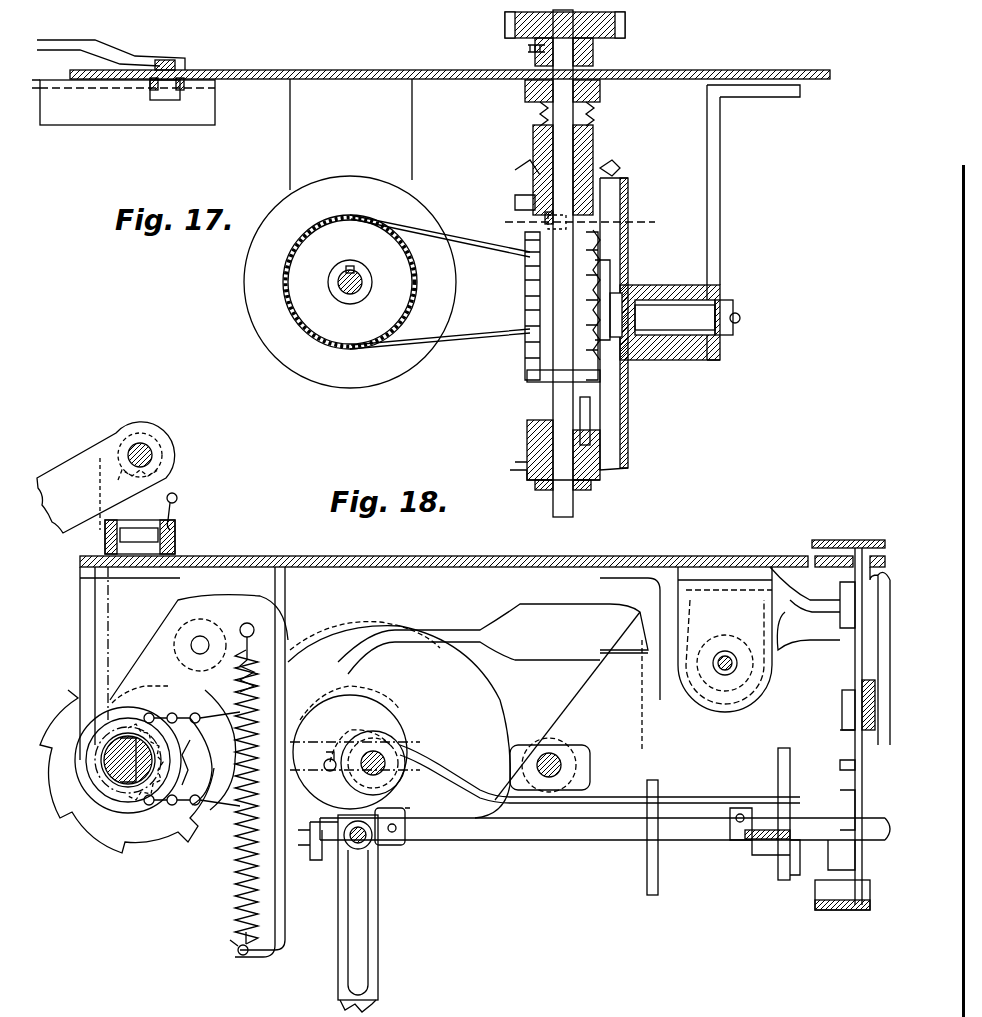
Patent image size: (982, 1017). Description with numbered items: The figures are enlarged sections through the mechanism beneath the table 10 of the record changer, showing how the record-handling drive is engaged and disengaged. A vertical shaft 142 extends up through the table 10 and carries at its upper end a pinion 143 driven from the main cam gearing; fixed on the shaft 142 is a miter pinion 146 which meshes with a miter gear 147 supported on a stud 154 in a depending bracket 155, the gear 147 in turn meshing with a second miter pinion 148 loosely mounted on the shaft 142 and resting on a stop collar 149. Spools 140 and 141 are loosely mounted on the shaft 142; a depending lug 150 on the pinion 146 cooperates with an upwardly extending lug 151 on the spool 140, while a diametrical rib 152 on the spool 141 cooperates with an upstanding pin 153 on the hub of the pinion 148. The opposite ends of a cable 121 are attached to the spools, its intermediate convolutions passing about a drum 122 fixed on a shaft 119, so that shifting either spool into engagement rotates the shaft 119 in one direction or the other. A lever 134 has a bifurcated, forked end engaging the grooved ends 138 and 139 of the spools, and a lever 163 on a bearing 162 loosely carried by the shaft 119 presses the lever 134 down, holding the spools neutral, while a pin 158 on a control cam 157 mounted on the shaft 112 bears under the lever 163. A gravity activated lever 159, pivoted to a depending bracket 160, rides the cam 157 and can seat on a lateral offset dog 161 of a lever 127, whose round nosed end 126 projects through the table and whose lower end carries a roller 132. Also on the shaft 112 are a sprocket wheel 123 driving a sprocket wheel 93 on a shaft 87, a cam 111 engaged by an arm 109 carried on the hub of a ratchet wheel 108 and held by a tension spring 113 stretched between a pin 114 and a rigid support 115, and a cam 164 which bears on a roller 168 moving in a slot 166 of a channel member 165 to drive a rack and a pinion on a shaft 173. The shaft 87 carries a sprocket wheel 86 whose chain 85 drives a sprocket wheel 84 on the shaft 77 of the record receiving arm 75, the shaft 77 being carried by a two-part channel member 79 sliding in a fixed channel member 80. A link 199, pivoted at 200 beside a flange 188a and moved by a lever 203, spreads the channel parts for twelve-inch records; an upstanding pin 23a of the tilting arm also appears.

In FIG. 17, the table 10 is at (372, 70).
In FIG. 18, the table 10 is at (276, 555).
In FIG. 17, the lever 203 is at (111, 45).
In FIG. 17, the downwardly extending flange 188a is at (122, 118).
In FIG. 17, the pivot 200 is at (175, 100).
In FIG. 17, the link 199 is at (185, 88).
In FIG. 17, the drum 122 is at (352, 348).
In FIG. 17, the shaft 119 is at (350, 294).
In FIG. 18, the shaft 119 is at (565, 751).
In FIG. 17, the cable 121 is at (462, 338).
In FIG. 17, the vertical shaft 142 is at (580, 121).
In FIG. 17, the pinion 143 is at (625, 33).
In FIG. 17, the miter pinion 146 is at (616, 168).
In FIG. 17, the miter gear 147 is at (628, 189).
In FIG. 17, the depending lug 150 is at (592, 218).
In FIG. 17, the upwardly extending lug 151 is at (545, 219).
In FIG. 17, the depending bracket 155 is at (720, 148).
In FIG. 17, the spool 140 is at (600, 259).
In FIG. 17, the stud 154 is at (687, 317).
In FIG. 17, the end of spool 140 138 is at (528, 279).
In FIG. 17, the end of spool 141 139 is at (530, 307).
In FIG. 17, the spool 141 is at (600, 356).
In FIG. 17, the diametrical rib 152 is at (530, 381).
In FIG. 17, the upstanding pin 153 is at (590, 409).
In FIG. 17, the second miter pinion 148 is at (605, 479).
In FIG. 17, the stop collar 149 is at (585, 491).
In FIG. 18, the record receiving arm 75 is at (60, 470).
In FIG. 18, the shaft 77 is at (152, 457).
In FIG. 18, the sprocket wheel 84 is at (180, 481).
In FIG. 18, the sprocket chain 85 is at (178, 511).
In FIG. 18, the two-part channel member 79 is at (175, 536).
In FIG. 18, the fixed channel member 80 is at (180, 549).
In FIG. 18, the arm 109 is at (210, 599).
In FIG. 18, the pin 114 is at (254, 631).
In FIG. 18, the cam 164 is at (345, 649).
In FIG. 18, the cam 111 is at (390, 625).
In FIG. 18, the gravity activated lever 159 is at (515, 653).
In FIG. 18, the control cam 157 is at (380, 691).
In FIG. 18, the laterally extending pin 158 is at (385, 717).
In FIG. 18, the sprocket wheel 123 is at (355, 752).
In FIG. 18, the shaft 112 is at (400, 786).
In FIG. 18, the lever 163 is at (458, 763).
In FIG. 18, the bearing 162 is at (590, 763).
In FIG. 18, the depending bracket 160 is at (708, 713).
In FIG. 18, the lateral offset dog 161 is at (800, 569).
In FIG. 18, the round nosed end 126 is at (860, 540).
In FIG. 18, the ratchet wheel 108 is at (125, 851).
In FIG. 18, the shaft 87 is at (100, 816).
In FIG. 18, the sprocket wheel 86 is at (150, 713).
In FIG. 18, the sprocket wheel 93 is at (192, 750).
In FIG. 18, the tension spring 113 is at (235, 873).
In FIG. 18, the rigid support 115 is at (238, 931).
In FIG. 18, the shaft 173 is at (540, 843).
In FIG. 18, the roller 168 is at (372, 847).
In FIG. 18, the channel member 165 is at (378, 947).
In FIG. 18, the slot 166 is at (360, 913).
In FIG. 18, the lever 134 is at (735, 859).
In FIG. 18, the lever 127 is at (840, 801).
In FIG. 18, the roller 132 is at (845, 911).
In FIG. 18, the upstanding pin 23a is at (245, 997).